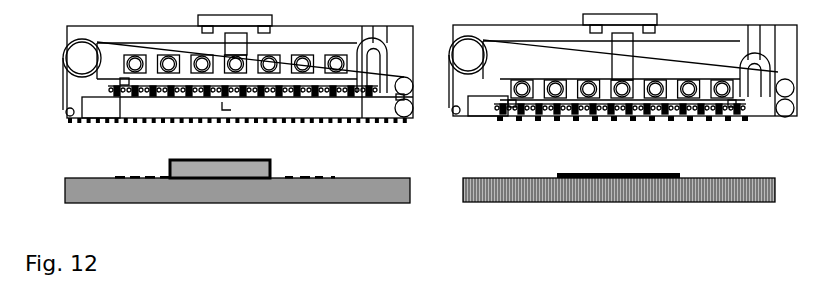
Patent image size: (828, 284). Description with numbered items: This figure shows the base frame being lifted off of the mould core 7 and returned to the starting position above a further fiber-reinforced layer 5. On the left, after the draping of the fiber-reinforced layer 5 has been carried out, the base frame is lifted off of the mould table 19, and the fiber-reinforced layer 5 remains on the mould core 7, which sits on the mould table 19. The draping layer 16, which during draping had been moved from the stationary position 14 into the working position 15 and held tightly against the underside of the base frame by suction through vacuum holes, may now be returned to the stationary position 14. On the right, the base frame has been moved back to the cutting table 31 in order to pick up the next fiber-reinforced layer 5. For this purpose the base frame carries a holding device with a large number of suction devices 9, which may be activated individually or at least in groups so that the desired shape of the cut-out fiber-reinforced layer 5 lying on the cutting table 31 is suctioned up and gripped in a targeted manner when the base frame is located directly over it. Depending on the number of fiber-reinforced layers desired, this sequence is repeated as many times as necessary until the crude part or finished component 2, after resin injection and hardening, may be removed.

The finished component 2 is at (165, 162).
The fiber-reinforced layer 5 is at (620, 170).
The mould core 7 is at (275, 162).
The suction devices 9 is at (738, 126).
The stationary position 14 is at (458, 127).
The working position 15 is at (55, 100).
The draping layer 16 is at (85, 128).
The mould table 19 is at (327, 186).
The cutting table 31 is at (716, 195).